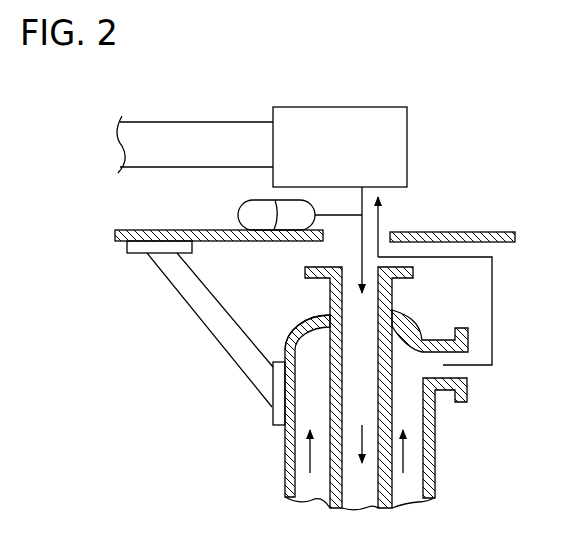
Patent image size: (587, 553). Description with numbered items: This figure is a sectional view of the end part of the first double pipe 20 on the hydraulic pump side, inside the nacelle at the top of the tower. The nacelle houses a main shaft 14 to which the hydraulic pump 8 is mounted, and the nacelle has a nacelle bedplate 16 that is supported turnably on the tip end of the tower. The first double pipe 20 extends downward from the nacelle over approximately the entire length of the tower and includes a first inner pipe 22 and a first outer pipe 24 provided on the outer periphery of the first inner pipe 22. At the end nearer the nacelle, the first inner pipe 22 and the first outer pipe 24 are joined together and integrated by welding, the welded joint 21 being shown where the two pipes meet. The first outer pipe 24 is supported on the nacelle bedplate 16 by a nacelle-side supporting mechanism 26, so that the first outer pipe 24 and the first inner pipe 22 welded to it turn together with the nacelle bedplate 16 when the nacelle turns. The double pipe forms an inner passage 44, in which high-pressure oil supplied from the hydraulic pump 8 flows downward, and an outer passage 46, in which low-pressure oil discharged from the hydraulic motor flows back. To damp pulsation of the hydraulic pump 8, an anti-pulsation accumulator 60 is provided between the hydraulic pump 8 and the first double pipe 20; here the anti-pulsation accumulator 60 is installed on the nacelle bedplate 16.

The hydraulic pump 8 is at (407, 134).
The main shaft 14 is at (191, 122).
The nacelle bedplate 16 is at (151, 230).
The first double pipe 20 is at (466, 480).
The welded joint 21 is at (392, 313).
The first inner pipe 22 is at (327, 478).
The first outer pipe 24 is at (285, 476).
The nacelle-side supporting mechanism 26 is at (212, 322).
The inner passage 44 is at (355, 312).
The outer passage 46 is at (408, 416).
The anti-pulsation accumulator 60 is at (238, 206).